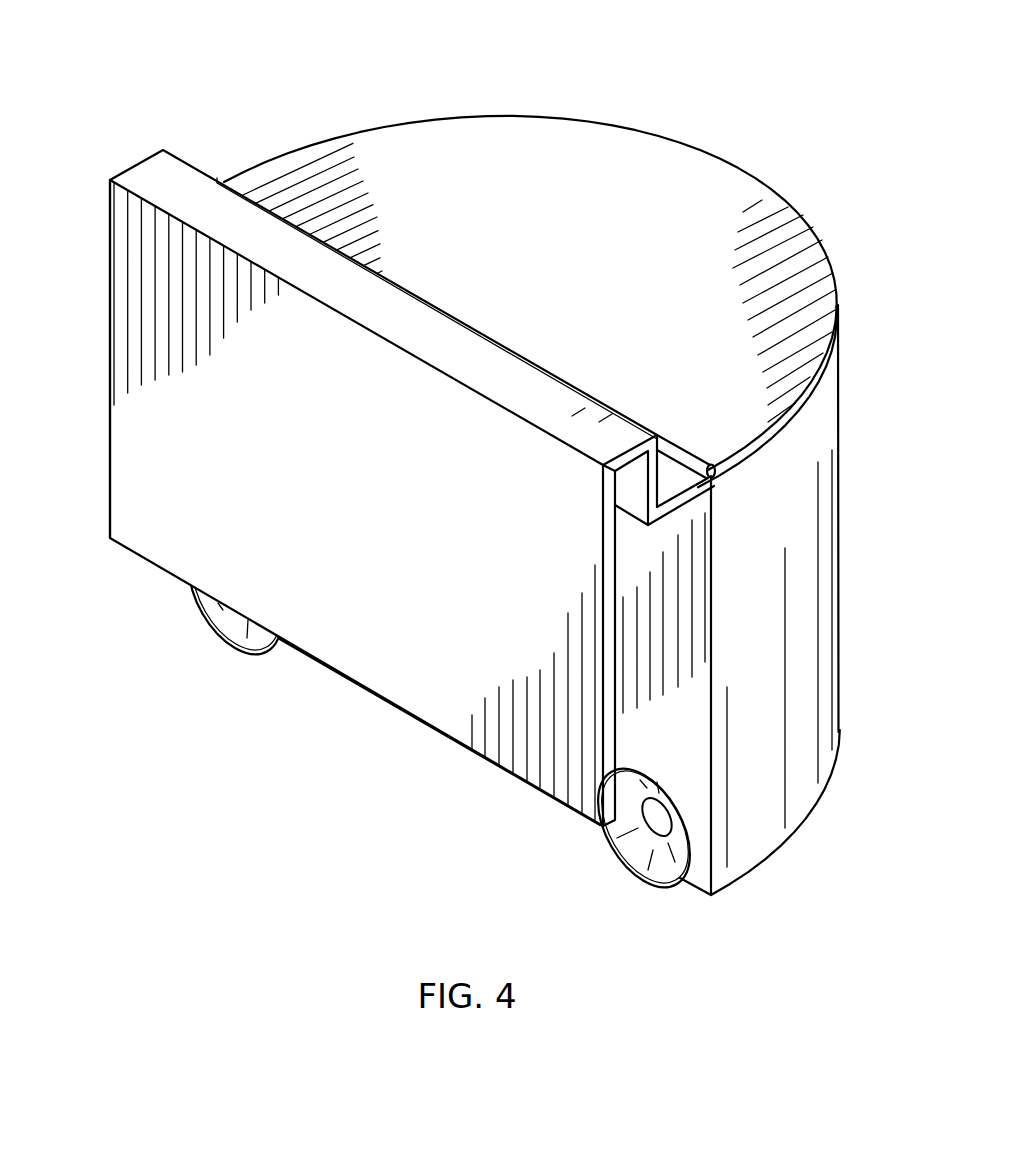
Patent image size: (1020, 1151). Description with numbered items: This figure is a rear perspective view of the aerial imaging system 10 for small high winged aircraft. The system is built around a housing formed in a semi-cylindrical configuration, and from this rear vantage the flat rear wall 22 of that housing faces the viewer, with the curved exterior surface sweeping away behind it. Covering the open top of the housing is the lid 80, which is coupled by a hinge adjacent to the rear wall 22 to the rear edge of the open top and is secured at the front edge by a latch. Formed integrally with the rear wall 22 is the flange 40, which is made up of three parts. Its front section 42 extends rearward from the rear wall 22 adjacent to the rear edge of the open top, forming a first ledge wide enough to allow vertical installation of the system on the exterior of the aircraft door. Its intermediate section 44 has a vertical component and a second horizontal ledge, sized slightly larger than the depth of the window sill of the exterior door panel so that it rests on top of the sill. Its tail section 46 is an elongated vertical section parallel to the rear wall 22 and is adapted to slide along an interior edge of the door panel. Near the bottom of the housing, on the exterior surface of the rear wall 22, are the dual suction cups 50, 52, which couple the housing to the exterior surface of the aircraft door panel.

The aerial imaging system 10 is at (749, 100).
The rear wall 22 is at (693, 780).
The flange 40 is at (114, 144).
The front section 42 is at (700, 497).
The intermediate section 44 is at (165, 148).
The tail section 46 is at (108, 478).
The suction cup 50 is at (642, 877).
The suction cup 52 is at (215, 625).
The lid 80 is at (448, 130).